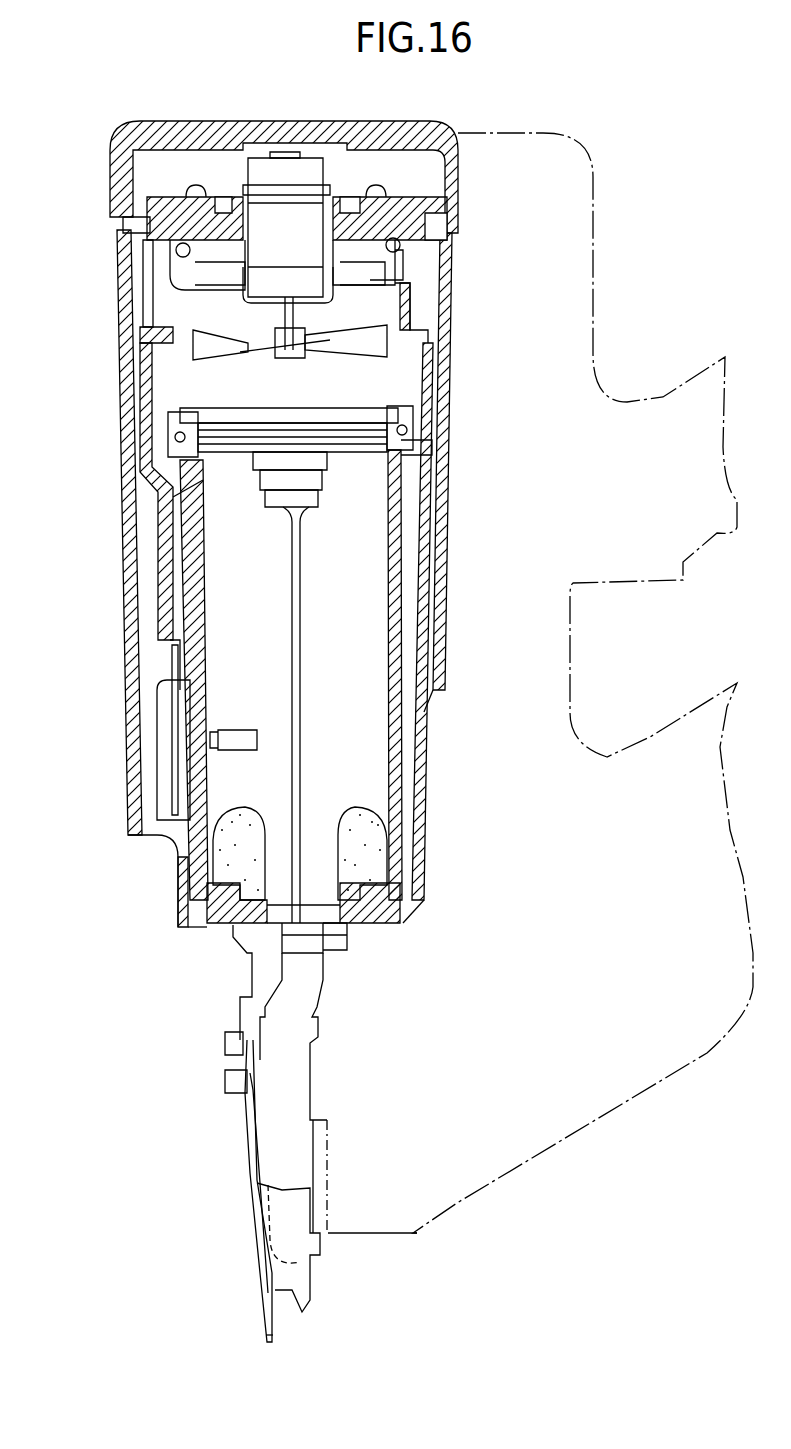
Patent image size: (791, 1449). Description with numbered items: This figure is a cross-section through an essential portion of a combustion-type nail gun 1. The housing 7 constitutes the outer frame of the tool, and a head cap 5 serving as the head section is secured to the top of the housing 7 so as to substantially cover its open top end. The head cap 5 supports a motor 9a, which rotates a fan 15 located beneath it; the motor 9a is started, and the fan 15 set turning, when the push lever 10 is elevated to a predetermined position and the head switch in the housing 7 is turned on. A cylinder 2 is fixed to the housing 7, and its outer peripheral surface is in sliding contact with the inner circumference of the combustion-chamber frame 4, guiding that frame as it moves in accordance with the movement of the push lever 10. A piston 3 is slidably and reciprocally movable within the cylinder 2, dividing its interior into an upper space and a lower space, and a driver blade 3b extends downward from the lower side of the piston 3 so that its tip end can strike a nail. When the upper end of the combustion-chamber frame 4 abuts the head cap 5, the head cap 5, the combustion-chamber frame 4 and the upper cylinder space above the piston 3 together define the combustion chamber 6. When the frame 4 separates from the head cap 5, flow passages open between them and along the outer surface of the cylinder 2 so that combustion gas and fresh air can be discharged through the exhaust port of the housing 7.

The combustion-type nail gun 1 is at (595, 240).
The cylinder 2 is at (200, 837).
The piston 3 is at (273, 490).
The driver blade 3b is at (292, 582).
The combustion-chamber frame 4 is at (147, 387).
The head cap 5 is at (170, 199).
The combustion chamber 6 is at (388, 382).
The housing 7 is at (118, 503).
The motor 9a is at (307, 172).
The push lever 10 is at (290, 287).
The fan 15 is at (193, 360).